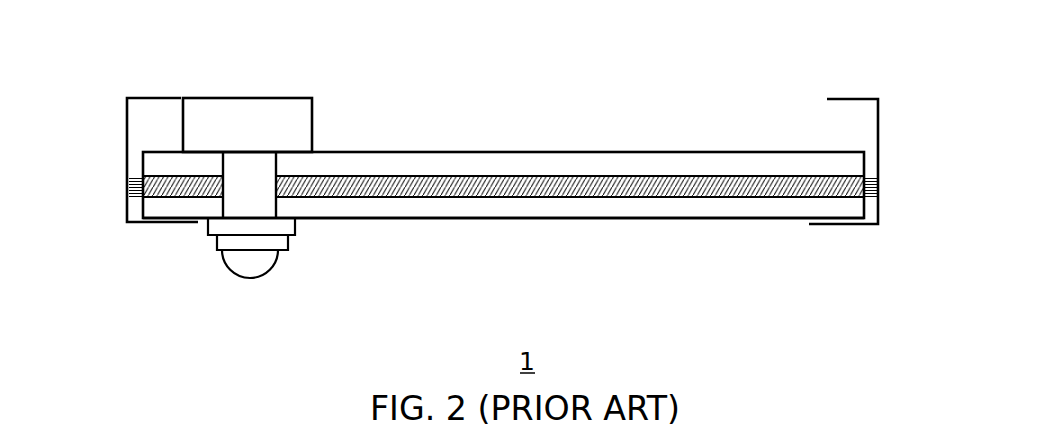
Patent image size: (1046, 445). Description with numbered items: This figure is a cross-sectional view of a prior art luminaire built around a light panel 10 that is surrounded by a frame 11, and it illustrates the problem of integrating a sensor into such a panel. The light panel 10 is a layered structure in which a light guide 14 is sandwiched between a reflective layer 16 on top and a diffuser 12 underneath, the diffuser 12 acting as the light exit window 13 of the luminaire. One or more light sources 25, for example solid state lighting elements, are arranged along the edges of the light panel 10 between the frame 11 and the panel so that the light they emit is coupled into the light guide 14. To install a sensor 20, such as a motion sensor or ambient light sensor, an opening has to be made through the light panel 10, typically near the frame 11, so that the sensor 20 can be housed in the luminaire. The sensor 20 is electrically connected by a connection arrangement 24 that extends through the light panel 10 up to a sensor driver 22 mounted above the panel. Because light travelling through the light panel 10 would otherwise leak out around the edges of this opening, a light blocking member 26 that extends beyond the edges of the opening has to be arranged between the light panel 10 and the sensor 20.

The light panel 10 is at (533, 218).
The frame 11 is at (150, 97).
The diffuser 12 is at (432, 210).
The light exit window 13 is at (590, 226).
The light guide 14 is at (655, 190).
The reflective layer 16 is at (738, 167).
The sensor 20 is at (250, 265).
The sensor driver 22 is at (303, 119).
The connection arrangement 24 is at (253, 210).
The light sources 25 is at (128, 183).
The light blocking member 26 is at (292, 237).